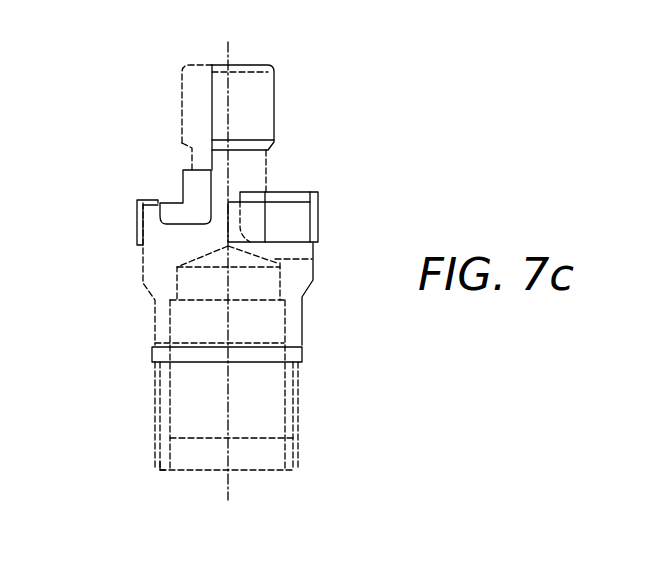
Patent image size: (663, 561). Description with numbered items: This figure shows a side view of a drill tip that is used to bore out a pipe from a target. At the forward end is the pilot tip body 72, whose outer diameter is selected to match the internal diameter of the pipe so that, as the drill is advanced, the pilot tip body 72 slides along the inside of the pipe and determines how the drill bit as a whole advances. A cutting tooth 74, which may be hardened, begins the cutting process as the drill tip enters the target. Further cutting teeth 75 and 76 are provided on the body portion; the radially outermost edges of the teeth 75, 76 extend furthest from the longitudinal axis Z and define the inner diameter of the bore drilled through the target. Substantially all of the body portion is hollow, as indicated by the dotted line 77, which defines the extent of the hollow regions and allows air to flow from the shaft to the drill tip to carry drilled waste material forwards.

The pilot tip body 72 is at (275, 102).
The cutting tooth 74 is at (182, 177).
The cutting tooth 75 is at (318, 215).
The cutting tooth 76 is at (137, 212).
The dotted line 77 is at (178, 470).
The longitudinal axis Z is at (232, 53).